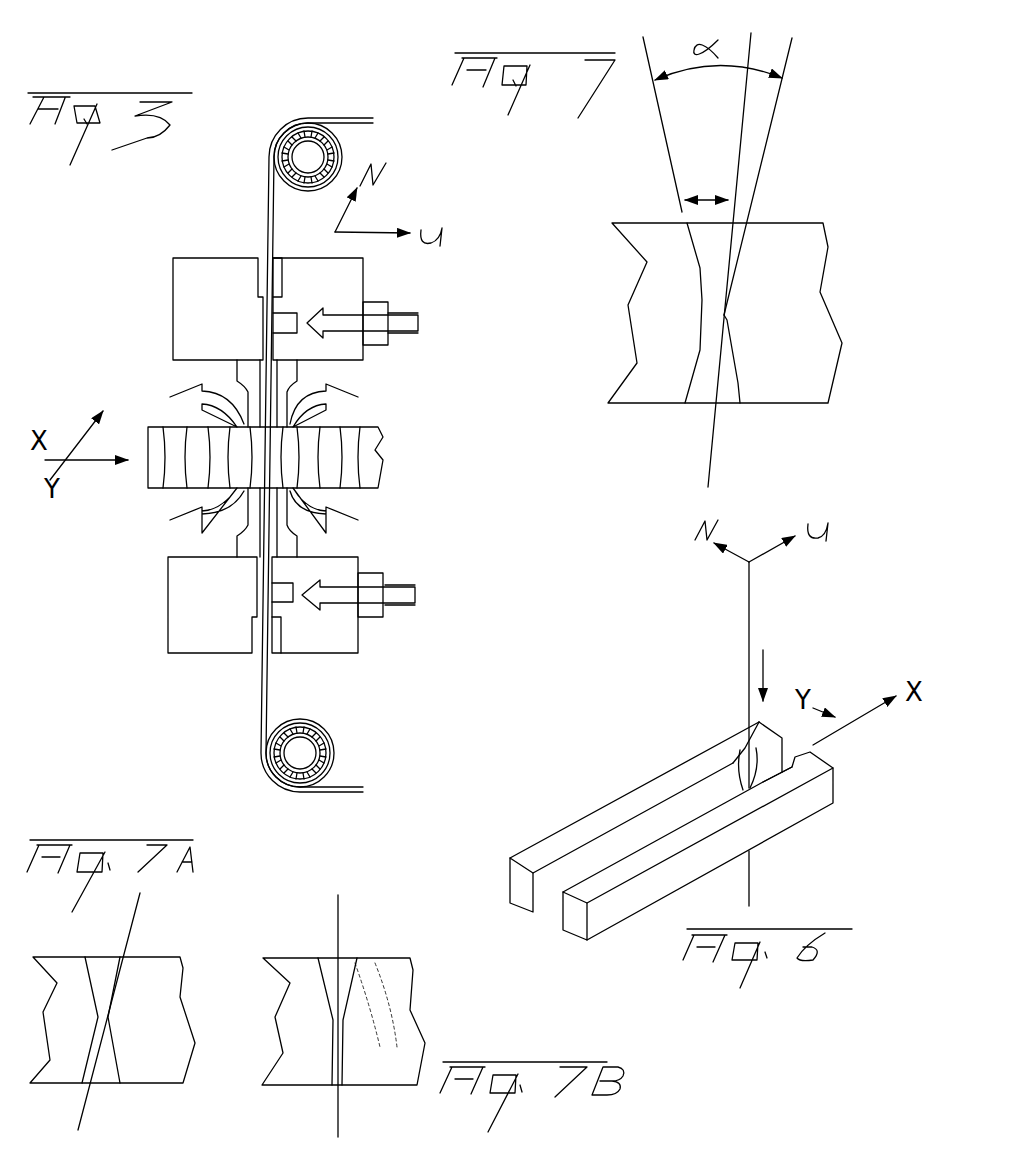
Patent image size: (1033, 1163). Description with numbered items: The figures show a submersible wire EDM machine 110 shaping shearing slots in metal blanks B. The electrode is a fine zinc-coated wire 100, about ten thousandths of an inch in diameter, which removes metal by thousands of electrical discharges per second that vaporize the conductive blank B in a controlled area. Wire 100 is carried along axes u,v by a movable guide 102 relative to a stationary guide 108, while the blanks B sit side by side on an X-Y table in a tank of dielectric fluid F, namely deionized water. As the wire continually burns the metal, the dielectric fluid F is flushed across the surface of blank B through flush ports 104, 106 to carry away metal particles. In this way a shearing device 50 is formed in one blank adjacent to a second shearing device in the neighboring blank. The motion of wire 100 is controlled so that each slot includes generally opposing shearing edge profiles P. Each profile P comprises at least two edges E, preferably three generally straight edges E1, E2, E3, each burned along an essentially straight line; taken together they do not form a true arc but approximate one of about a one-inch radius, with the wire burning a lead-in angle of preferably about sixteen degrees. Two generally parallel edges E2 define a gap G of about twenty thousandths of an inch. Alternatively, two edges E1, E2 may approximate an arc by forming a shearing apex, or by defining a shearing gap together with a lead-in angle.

In FIG. 5, the wire 100 is at (262, 196).
In FIG. 7, the wire 100 is at (746, 149).
In FIG. 6, the wire 100 is at (745, 652).
In FIG. 7A, the wire 100 is at (135, 924).
In FIG. 7B, the wire 100 is at (345, 947).
In FIG. 5, the submersible wire EDM machine 110 is at (263, 97).
In FIG. 5, the movable guide 102 is at (255, 283).
In FIG. 5, the flush port 104 is at (243, 372).
In FIG. 5, the flush port 106 is at (238, 546).
In FIG. 5, the stationary guide 108 is at (248, 633).
In FIG. 5, the shearing device 50 is at (378, 465).
In FIG. 5, the blank B is at (381, 421).
In FIG. 7, the blank B is at (664, 216).
In FIG. 6, the blank B is at (511, 884).
In FIG. 7A, the blank B is at (51, 954).
In FIG. 7B, the blank B is at (292, 952).
In FIG. 7, the shearing edge profile P is at (726, 271).
In FIG. 6, the shearing edge profile P is at (733, 750).
In FIG. 5, the dielectric fluid F is at (418, 323).
In FIG. 7A, the edge E is at (117, 1052).
In FIG. 7B, the edge E is at (342, 1043).
In FIG. 7, the first generally straight edge E1 is at (738, 256).
In FIG. 7, the second generally straight edge E2 is at (727, 327).
In FIG. 7, the third generally straight edge E3 is at (737, 377).
In FIG. 7, the gap G is at (715, 318).